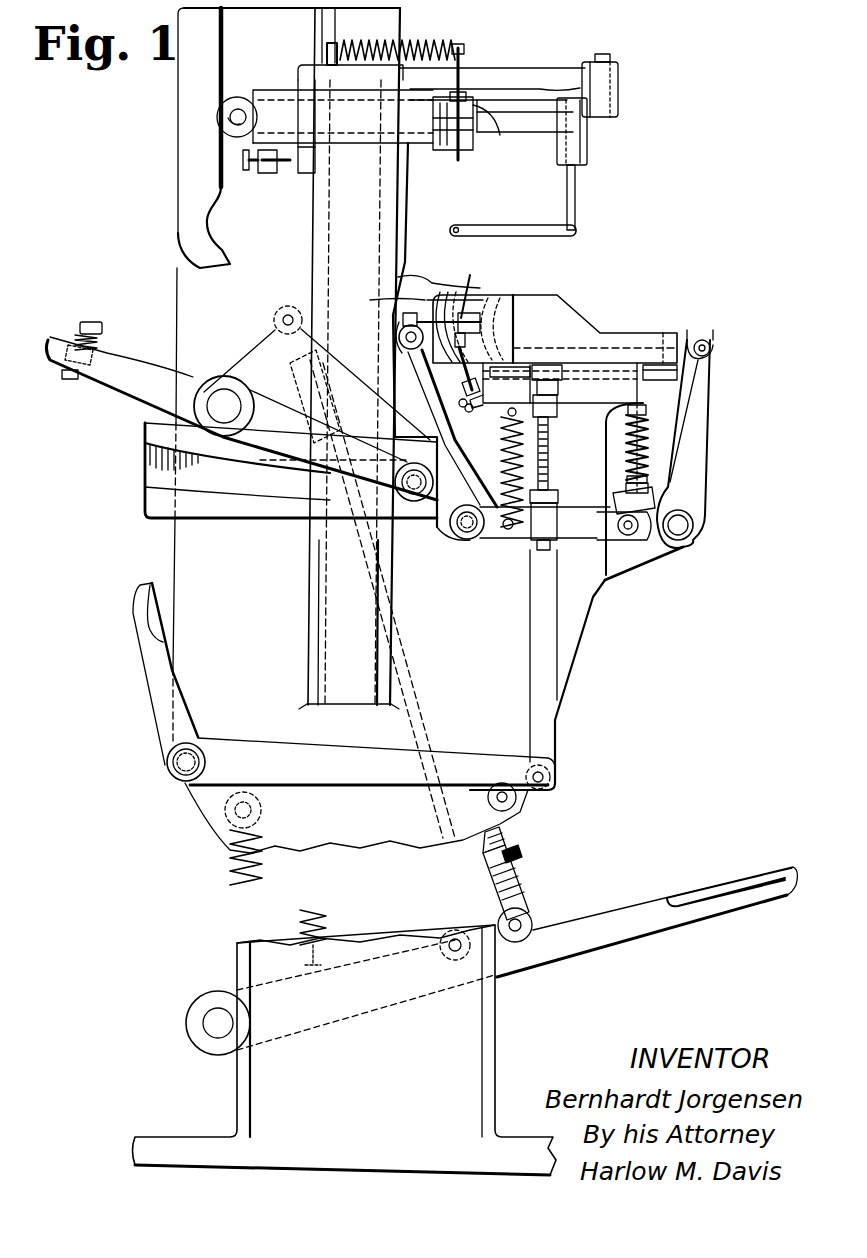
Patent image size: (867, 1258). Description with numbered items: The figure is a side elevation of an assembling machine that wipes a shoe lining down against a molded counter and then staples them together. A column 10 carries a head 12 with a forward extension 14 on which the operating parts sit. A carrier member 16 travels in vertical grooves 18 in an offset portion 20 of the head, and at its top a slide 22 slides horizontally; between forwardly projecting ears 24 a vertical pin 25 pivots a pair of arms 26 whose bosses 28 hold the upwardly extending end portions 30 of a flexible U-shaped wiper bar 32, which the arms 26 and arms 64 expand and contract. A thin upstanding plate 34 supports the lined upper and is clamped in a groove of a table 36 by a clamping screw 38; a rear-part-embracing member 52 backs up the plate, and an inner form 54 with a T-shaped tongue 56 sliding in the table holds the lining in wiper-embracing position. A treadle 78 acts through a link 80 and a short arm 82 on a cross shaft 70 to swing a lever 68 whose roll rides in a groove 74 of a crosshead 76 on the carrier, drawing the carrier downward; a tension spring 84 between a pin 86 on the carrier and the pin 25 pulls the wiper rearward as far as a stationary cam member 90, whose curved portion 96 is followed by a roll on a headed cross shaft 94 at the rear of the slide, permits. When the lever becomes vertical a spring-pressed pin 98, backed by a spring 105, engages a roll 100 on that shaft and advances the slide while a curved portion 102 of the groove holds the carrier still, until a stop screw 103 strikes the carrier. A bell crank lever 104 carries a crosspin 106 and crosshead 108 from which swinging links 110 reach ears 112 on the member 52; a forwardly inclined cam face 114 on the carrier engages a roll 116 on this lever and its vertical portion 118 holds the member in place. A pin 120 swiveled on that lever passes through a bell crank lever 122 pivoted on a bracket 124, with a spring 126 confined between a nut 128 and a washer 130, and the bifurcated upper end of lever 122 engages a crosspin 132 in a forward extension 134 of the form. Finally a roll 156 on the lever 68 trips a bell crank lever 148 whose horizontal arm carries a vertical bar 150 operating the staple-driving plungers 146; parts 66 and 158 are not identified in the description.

The column 10 is at (345, 1042).
The head 12 is at (330, 734).
The forward extension 14 is at (560, 596).
The carrier member 16 is at (312, 235).
The vertical grooves 18 is at (310, 565).
The offset portion 20 is at (322, 648).
The slide 22 is at (280, 90).
The forwardly projecting ears 24 is at (474, 142).
The vertical pin 25 is at (462, 56).
The arms 26 is at (545, 130).
The bosses 28 is at (588, 151).
The end portions 30 is at (576, 185).
The flexible wiper member or bar 32 is at (515, 228).
The upstanding plate 34 is at (450, 292).
The table 36 is at (500, 390).
The clamping screw 38 is at (446, 405).
The rear-part-embracing member or shoe 52 is at (413, 296).
The inner form 54 is at (493, 294).
The T-shaped tongue 56 is at (656, 380).
The arms 64 is at (600, 108).
The arm 66 is at (500, 76).
The rocker arm or lever 68 is at (172, 372).
The cross shaft 70 is at (220, 398).
The groove 74 is at (230, 500).
The crosshead 76 is at (203, 523).
The treadle 78 is at (708, 890).
The link 80 is at (480, 840).
The short arm 82 is at (329, 572).
The tension spring 84 is at (434, 44).
The pin 86 is at (328, 52).
The stationary vertical cam member 90 is at (197, 375).
The headed cross shaft 94 is at (246, 117).
The curved portion 96 is at (209, 213).
The spring-pressed pin 98 is at (90, 322).
The roll 100 is at (238, 97).
The curved portion of groove 102 is at (148, 456).
The stop screw 103 is at (242, 160).
The bell crank lever 104 is at (412, 406).
The spring 105 is at (74, 336).
The crosspin 106 is at (399, 339).
The crosshead 108 is at (403, 322).
The swinging links 110 is at (450, 330).
The ears 112 is at (479, 285).
The cam face 114 is at (407, 268).
The roll 116 is at (403, 350).
The vertical portion 118 is at (409, 203).
The pin 120 is at (624, 450).
The bell crank lever 122 is at (703, 418).
The bracket 124 is at (655, 548).
The spring 126 is at (645, 462).
The nut 128 is at (627, 414).
The washer 130 is at (648, 487).
The crosspin 132 is at (711, 348).
The forward extension 134 is at (688, 340).
The plunger 146 is at (558, 483).
The bell crank lever 148 is at (361, 763).
The vertical bar 150 is at (533, 674).
The roll 156 is at (455, 535).
The cap 158 is at (398, 276).